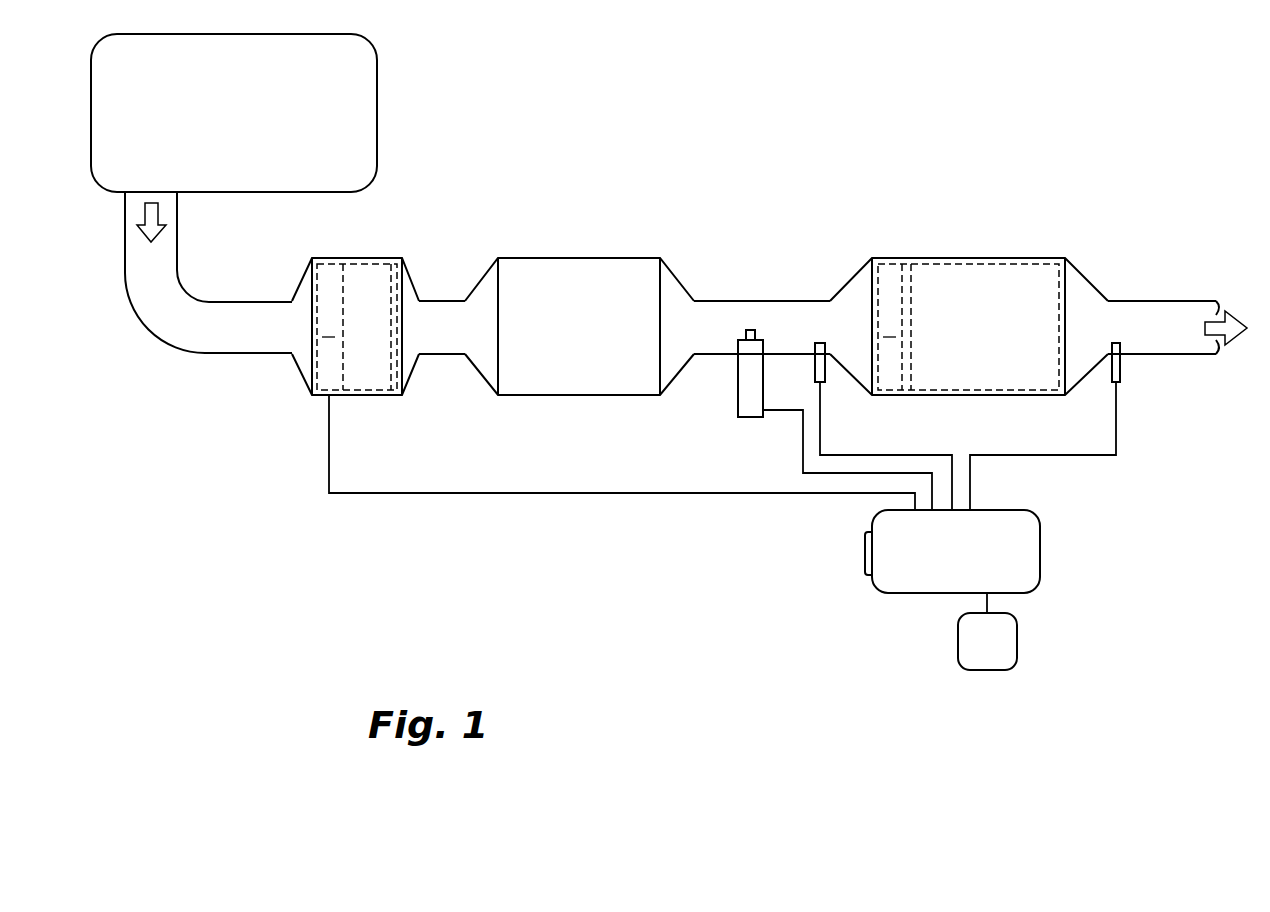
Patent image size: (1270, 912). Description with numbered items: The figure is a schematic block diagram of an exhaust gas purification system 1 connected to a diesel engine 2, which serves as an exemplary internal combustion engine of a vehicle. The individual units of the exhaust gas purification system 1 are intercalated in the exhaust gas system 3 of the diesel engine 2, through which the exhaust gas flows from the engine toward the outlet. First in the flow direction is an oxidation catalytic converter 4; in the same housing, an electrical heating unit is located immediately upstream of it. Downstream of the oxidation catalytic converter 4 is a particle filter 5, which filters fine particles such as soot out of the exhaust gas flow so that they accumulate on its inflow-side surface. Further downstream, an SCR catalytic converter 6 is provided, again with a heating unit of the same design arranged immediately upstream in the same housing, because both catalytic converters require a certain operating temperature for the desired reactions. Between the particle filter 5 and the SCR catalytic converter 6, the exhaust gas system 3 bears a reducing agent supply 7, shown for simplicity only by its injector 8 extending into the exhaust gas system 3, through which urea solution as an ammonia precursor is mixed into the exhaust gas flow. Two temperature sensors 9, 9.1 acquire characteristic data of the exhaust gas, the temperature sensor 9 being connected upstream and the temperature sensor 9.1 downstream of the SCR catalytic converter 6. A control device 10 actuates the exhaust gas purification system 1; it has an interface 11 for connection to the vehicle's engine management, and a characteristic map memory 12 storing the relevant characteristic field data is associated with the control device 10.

The exhaust gas purification system 1 is at (855, 202).
The diesel engine 2 is at (234, 122).
The exhaust gas system 3 is at (176, 344).
The oxidation catalytic converter 4 is at (376, 338).
The particle filter 5 is at (582, 338).
The SCR catalytic converter 6 is at (989, 338).
The reducing agent supply 7 is at (808, 420).
The injector 8 is at (728, 390).
The temperature sensor 9 is at (814, 364).
The temperature sensor 9.1 is at (1110, 369).
The control device 10 is at (965, 560).
The interface 11 is at (867, 574).
The characteristic map memory 12 is at (1000, 653).